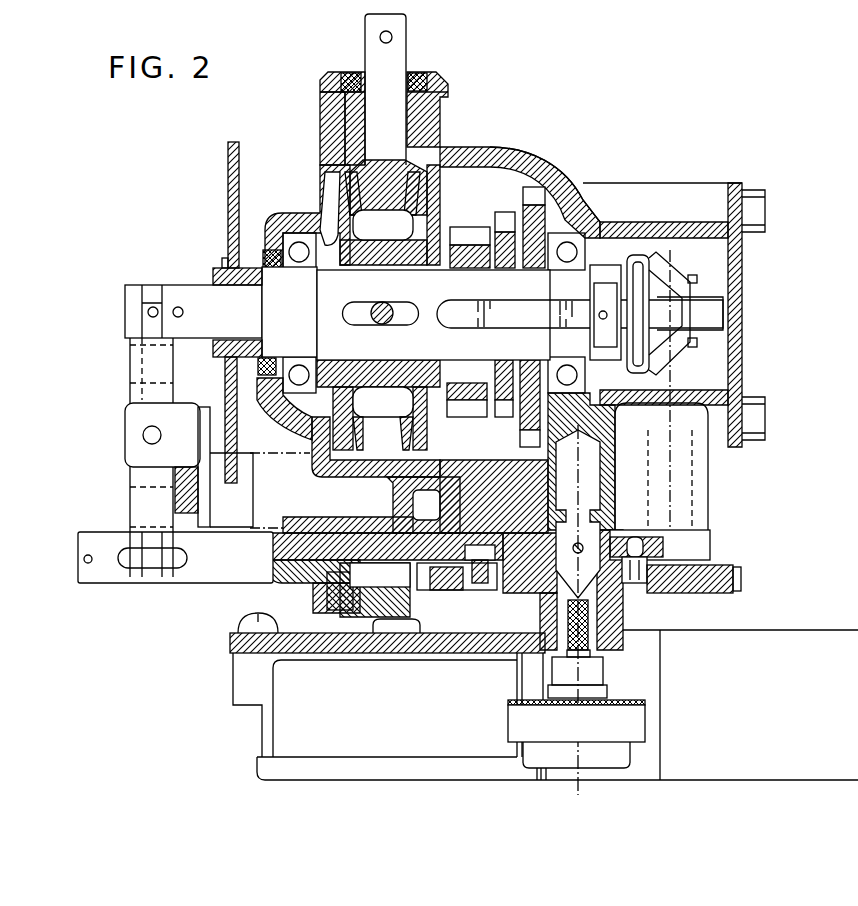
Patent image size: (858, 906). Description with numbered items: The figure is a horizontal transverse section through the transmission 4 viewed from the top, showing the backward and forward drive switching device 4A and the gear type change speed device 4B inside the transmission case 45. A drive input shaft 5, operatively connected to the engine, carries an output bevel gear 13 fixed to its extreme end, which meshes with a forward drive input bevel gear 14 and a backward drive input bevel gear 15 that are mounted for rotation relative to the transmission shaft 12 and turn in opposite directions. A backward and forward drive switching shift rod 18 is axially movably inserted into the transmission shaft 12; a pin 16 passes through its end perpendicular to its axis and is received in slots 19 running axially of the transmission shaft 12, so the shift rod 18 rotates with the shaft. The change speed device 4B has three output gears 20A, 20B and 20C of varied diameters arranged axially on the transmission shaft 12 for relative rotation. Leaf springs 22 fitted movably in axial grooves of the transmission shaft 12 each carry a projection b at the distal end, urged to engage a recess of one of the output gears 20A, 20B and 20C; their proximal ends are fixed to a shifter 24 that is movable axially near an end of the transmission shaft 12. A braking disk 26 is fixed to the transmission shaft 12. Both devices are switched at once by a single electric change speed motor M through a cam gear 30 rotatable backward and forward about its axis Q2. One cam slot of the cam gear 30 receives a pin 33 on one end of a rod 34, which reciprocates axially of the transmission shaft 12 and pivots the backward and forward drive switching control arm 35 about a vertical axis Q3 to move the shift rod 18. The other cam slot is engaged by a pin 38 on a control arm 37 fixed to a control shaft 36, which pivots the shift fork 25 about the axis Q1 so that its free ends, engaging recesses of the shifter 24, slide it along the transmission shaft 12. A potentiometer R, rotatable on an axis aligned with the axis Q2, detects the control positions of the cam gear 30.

The transmission 4 is at (568, 144).
The backward and forward drive switching device 4A is at (335, 204).
The gear type change speed device 4B is at (495, 172).
The drive input shaft 5 is at (366, 38).
The transmission shaft 12 is at (213, 277).
The output bevel gear 13 is at (382, 158).
The forward drive input bevel gear 14 is at (409, 424).
The backward drive input bevel gear 15 is at (326, 168).
The pin 16 is at (380, 318).
The backward and forward drive switching shift rod 18 is at (188, 290).
The slots 19 is at (358, 312).
The output gear 20A is at (462, 226).
The output gear 20B is at (505, 212).
The output gear 20C is at (520, 434).
The leaf spring 22 is at (517, 318).
The shifter 24 is at (613, 265).
The shift fork 25 is at (670, 267).
The braking disk 26 is at (228, 196).
The cam gear 30 is at (738, 578).
The pin 33 is at (478, 577).
The rod 34 is at (212, 577).
The backward and forward drive switching control arm 35 is at (140, 373).
The control shaft 36 is at (694, 283).
The control arm 37 is at (712, 547).
The pin 38 is at (636, 573).
The transmission case 45 is at (575, 174).
The projection b is at (455, 322).
The pivotal axis Q1 is at (672, 470).
The rotational axis Q2 is at (578, 630).
The vertical axis Q3 is at (150, 438).
The potentiometer R is at (622, 755).
The electric change speed motor M is at (730, 767).